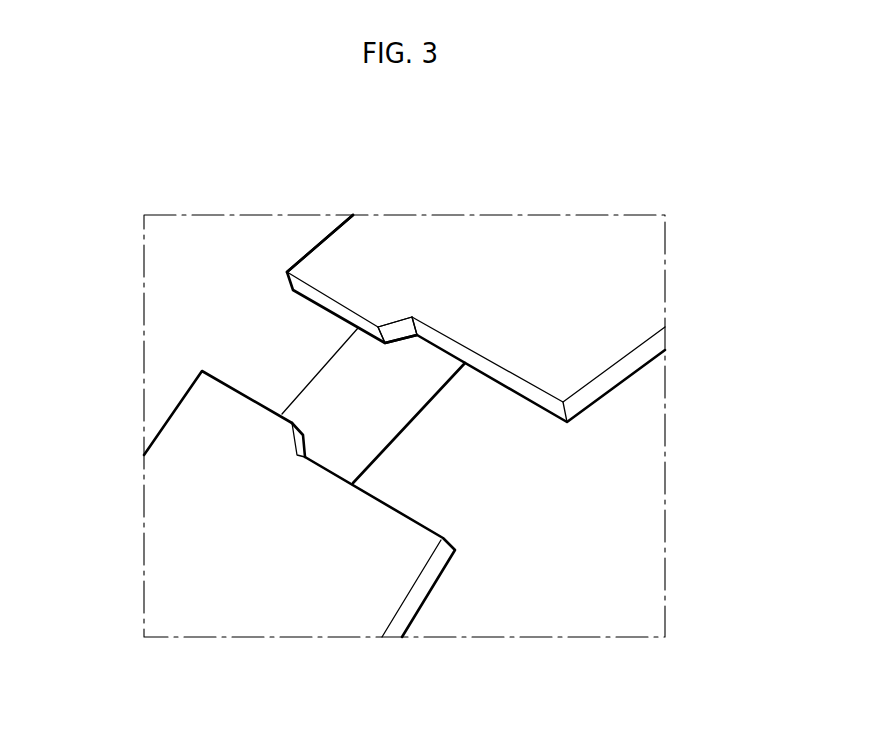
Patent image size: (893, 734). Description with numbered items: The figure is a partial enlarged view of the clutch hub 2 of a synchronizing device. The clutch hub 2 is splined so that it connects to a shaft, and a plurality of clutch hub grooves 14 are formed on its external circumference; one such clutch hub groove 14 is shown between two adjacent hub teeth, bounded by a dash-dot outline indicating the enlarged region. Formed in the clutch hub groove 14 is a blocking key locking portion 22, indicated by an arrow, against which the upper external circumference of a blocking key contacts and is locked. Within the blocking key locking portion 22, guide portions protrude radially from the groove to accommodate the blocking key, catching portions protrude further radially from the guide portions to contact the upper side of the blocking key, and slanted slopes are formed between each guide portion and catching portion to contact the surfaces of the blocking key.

The clutch hub 2 is at (642, 280).
The clutch hub groove 14 is at (408, 402).
The blocking key locking portion 22 is at (357, 273).